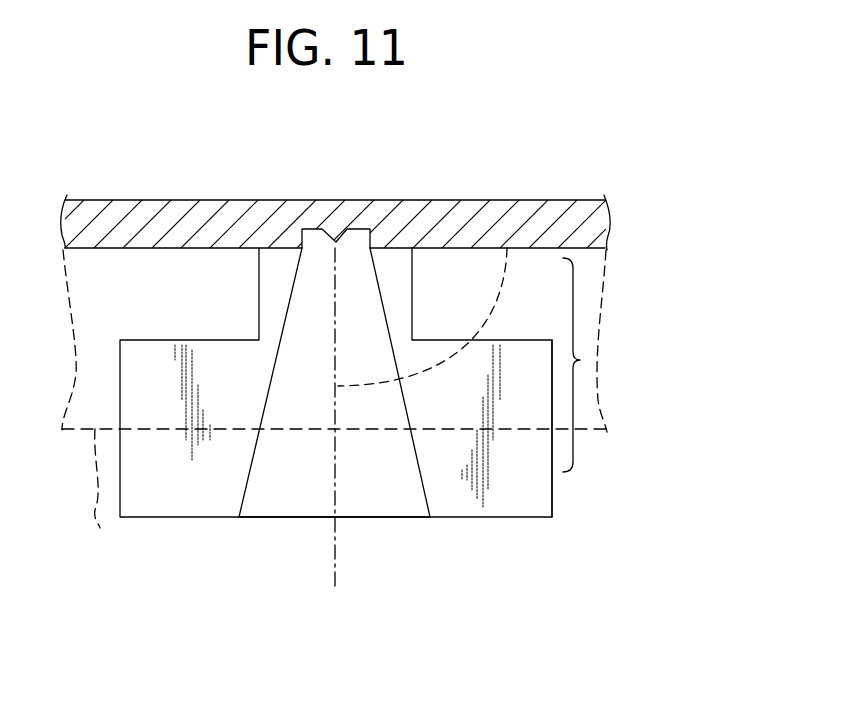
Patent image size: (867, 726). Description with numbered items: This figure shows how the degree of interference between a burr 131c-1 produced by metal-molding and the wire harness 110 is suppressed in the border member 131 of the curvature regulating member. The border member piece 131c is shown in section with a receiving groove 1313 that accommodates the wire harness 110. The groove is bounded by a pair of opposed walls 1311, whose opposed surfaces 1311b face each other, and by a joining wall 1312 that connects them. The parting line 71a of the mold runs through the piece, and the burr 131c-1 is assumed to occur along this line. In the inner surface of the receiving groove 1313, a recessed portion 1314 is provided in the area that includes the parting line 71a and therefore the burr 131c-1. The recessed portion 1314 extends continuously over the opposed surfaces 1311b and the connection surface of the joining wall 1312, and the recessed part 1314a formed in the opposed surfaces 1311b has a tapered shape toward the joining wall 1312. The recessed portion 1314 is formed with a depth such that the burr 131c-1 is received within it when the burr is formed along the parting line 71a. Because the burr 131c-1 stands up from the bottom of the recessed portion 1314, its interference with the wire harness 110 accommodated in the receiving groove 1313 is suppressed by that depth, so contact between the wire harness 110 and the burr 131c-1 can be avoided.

The border member 131 is at (169, 192).
The border member piece 131c is at (335, 224).
The joining wall 1312 is at (344, 200).
The burr 131c-1 is at (507, 248).
The recessed portion 1314 is at (285, 297).
The recessed part 1314a is at (282, 479).
The opposed wall 1311 is at (475, 519).
The opposed surface 1311b is at (522, 489).
The receiving groove 1313 is at (580, 360).
The wire harness 110 is at (334, 404).
The parting line 71a is at (336, 576).